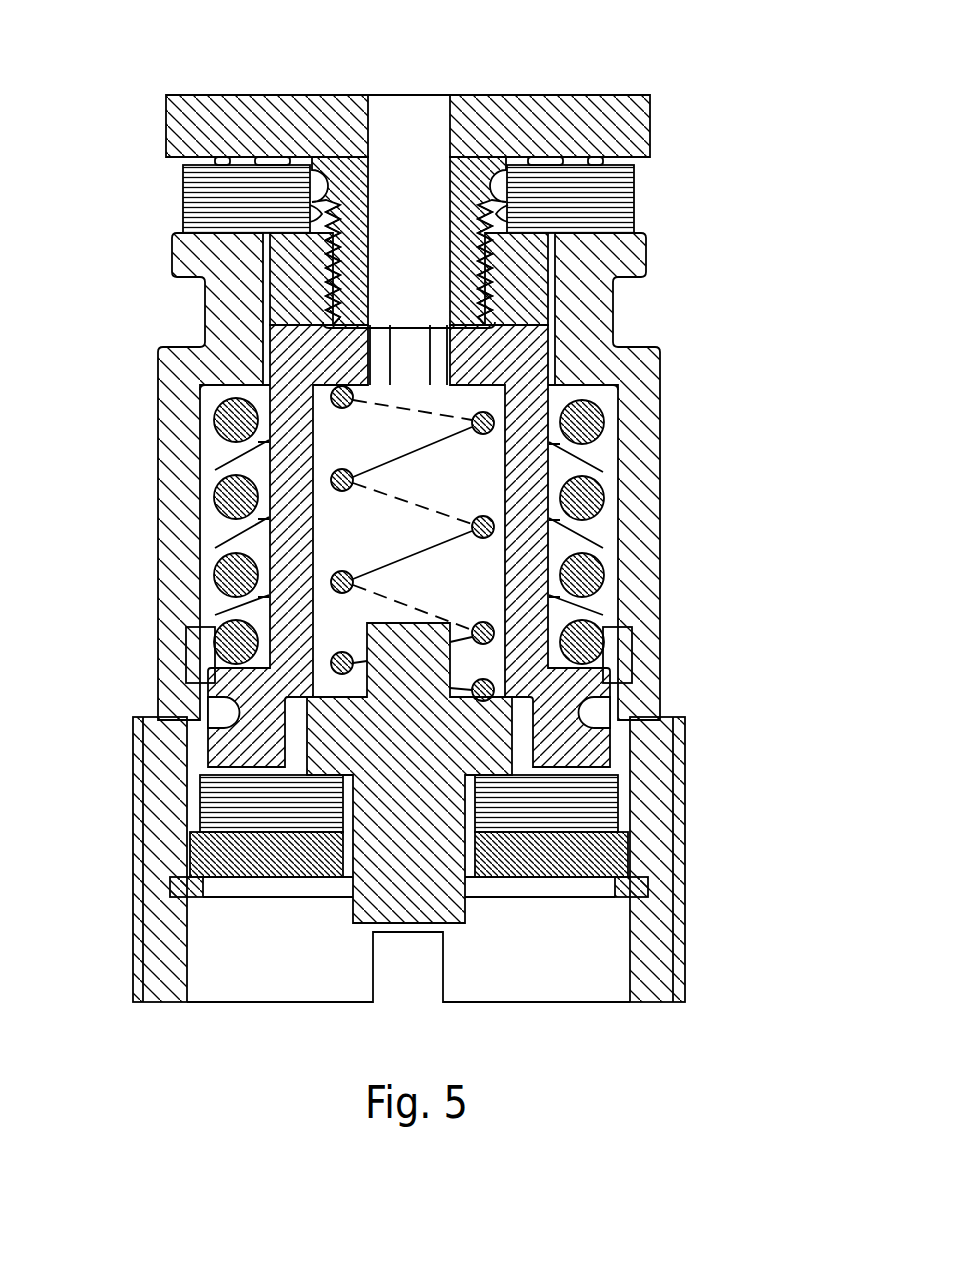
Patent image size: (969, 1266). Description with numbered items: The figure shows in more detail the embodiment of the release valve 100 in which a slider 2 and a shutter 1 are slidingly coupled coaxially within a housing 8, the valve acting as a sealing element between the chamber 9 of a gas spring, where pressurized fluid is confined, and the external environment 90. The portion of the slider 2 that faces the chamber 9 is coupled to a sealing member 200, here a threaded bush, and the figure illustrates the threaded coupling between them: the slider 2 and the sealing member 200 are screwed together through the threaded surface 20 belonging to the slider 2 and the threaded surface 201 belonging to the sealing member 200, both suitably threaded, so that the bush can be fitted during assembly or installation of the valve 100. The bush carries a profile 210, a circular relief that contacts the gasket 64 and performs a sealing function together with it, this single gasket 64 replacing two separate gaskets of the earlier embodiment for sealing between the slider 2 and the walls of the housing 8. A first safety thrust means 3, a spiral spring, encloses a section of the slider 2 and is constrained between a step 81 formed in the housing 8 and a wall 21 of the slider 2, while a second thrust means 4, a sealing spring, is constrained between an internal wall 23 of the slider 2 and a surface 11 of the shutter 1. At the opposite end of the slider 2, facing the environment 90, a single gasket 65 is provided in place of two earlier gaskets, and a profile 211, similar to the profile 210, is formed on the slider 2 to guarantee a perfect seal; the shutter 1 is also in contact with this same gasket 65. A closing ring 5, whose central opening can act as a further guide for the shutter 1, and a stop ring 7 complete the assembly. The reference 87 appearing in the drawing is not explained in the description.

The release valve 100 is at (583, 58).
The sealing member 200 is at (615, 105).
The profile 210 is at (296, 172).
The threaded surface of the sealing member 201 is at (305, 212).
The threaded surface of the slider 20 is at (334, 240).
The chamber 9 is at (430, 35).
The gasket 64 is at (213, 222).
The housing 8 is at (225, 312).
The internal wall of the slider 23 is at (305, 385).
The step 81 is at (590, 392).
The slider 2 is at (530, 492).
The second thrust means 4 is at (483, 527).
The first safety thrust means 3 is at (585, 672).
The wall of the slider 21 is at (607, 667).
The surface of the shutter 11 is at (325, 704).
The profile 211 is at (240, 765).
The gasket 65 is at (272, 803).
The closing ring 5 is at (220, 858).
The stop ring 7 is at (178, 887).
The shutter 1 is at (440, 898).
The external environment 90 is at (428, 1033).
The rotation direction 87 is at (195, 955).